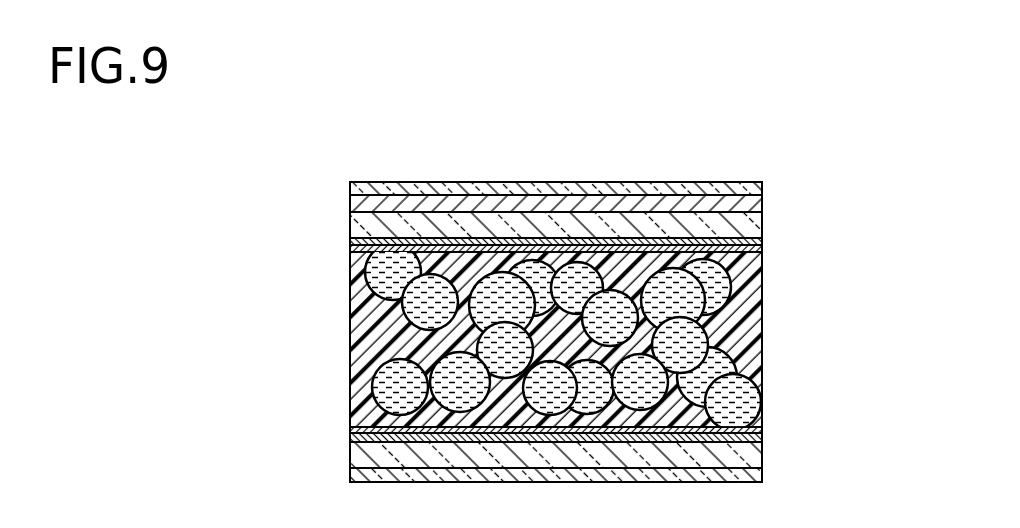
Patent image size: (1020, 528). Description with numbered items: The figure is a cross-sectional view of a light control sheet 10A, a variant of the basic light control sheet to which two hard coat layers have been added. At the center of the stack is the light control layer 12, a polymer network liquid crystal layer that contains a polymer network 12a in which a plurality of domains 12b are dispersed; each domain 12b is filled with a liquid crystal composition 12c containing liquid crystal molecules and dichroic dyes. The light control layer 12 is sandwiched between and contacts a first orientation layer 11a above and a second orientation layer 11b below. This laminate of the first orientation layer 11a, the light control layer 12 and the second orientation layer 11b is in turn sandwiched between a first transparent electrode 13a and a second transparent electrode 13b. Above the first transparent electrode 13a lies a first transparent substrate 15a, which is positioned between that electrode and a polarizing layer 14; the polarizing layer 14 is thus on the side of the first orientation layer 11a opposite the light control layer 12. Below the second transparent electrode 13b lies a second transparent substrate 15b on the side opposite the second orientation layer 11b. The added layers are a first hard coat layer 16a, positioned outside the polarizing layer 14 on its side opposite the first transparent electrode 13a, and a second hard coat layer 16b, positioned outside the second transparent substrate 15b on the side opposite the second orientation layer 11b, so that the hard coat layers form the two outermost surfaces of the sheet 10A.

The light control sheet 10A is at (858, 168).
The first orientation layer 11a is at (762, 248).
The second orientation layer 11b is at (762, 430).
The light control layer 12 is at (535, 337).
The polymer network 12a is at (762, 327).
The domains 12b is at (281, 423).
The liquid crystal composition 12c is at (354, 383).
The first transparent electrode 13a is at (350, 243).
The second transparent electrode 13b is at (350, 437).
The polarizing layer 14 is at (350, 210).
The first transparent substrate 15a is at (762, 222).
The second transparent substrate 15b is at (762, 446).
The first hard coat layer 16a is at (762, 189).
The second hard coat layer 16b is at (762, 478).